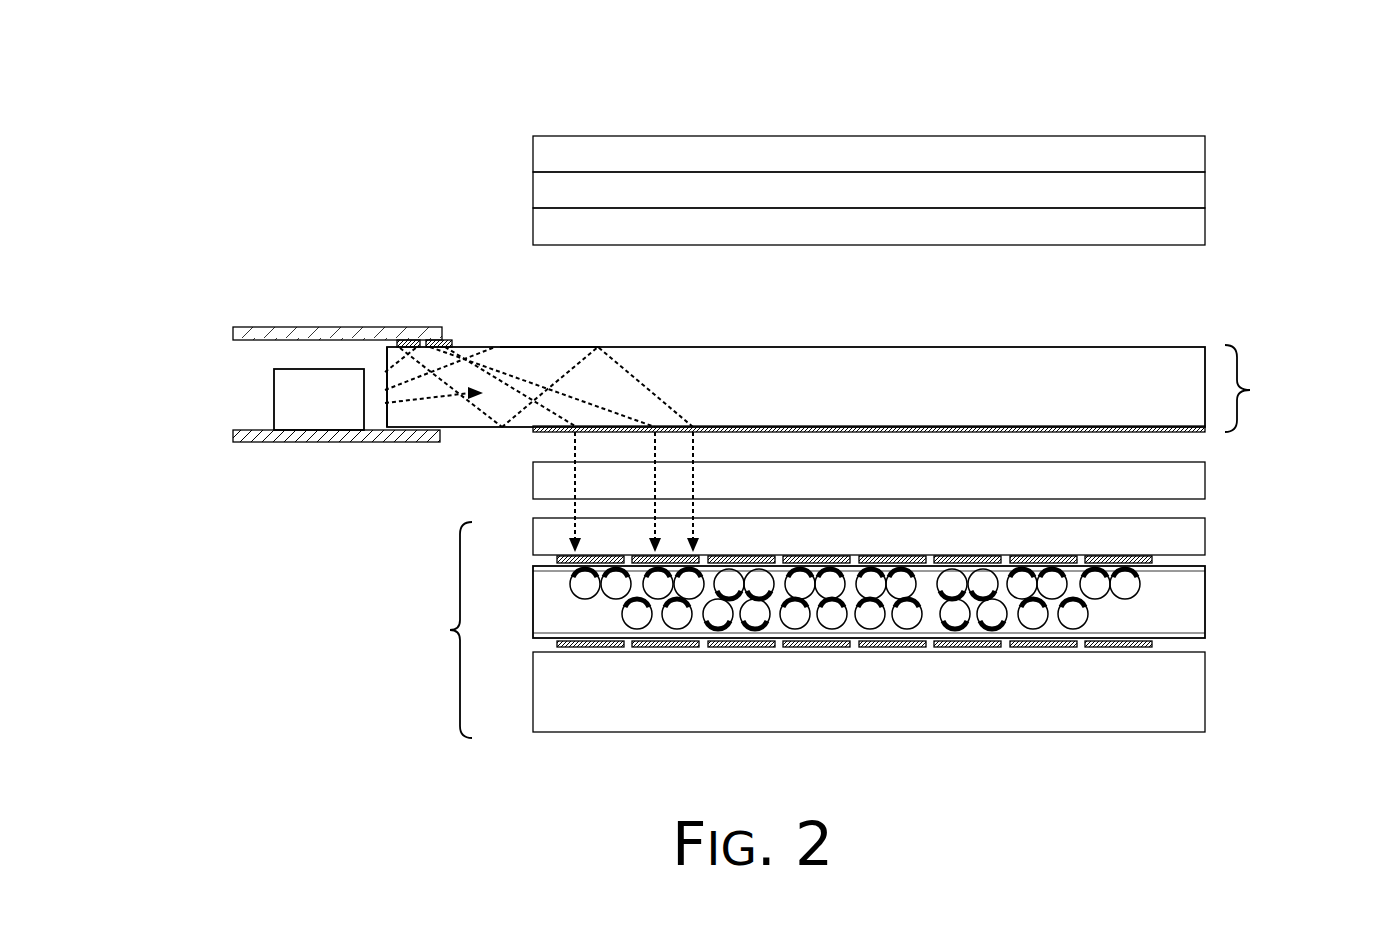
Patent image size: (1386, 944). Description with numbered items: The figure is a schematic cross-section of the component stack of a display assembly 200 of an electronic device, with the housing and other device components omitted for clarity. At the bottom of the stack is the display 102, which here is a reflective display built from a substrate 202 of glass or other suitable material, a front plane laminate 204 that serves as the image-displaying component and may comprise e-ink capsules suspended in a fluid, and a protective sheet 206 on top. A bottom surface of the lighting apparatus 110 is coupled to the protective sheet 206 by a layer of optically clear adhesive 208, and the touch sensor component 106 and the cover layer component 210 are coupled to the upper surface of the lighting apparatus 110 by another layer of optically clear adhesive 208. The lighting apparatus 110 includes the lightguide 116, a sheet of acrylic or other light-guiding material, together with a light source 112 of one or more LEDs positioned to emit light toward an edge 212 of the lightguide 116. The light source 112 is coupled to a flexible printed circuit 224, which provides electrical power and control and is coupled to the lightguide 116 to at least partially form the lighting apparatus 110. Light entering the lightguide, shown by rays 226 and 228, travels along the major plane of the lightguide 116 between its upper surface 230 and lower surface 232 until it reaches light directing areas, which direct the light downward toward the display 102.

The display assembly 200 is at (172, 72).
The cover layer component 210 is at (869, 154).
The touch sensor component 106 is at (869, 190).
The optically clear adhesive (OCA) 208 is at (869, 353).
The lightguide 116 is at (795, 446).
The light ray entering lightguide 226 is at (385, 368).
The light ray propagating in lightguide 228 is at (437, 397).
The top surface of lightguide 230 is at (514, 347).
The edge of the lightguide 212 is at (386, 415).
The bottom surface of lightguide 232 is at (522, 431).
The light source 112 is at (273, 370).
The flexible printed circuit (FPC) 224 is at (252, 443).
The lighting apparatus 110 is at (1285, 388).
The protective sheet 206 is at (869, 536).
The front plane laminate (FPL) 204 is at (530, 648).
The display 102 is at (427, 630).
The substrate 202 is at (869, 692).